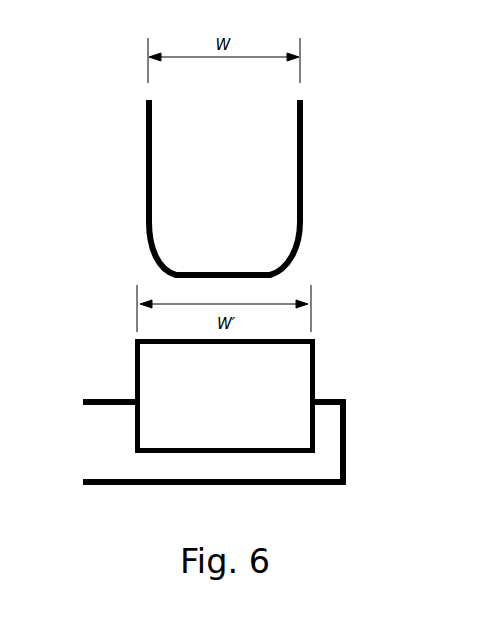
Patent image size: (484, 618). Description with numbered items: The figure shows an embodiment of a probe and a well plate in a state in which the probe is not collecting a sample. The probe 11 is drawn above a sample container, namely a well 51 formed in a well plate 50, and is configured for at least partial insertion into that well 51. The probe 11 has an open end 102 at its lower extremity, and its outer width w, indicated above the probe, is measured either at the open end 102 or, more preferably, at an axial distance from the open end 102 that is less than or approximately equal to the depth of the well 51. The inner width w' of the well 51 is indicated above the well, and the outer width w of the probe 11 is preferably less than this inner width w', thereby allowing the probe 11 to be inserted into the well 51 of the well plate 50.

The probe 11 is at (145, 193).
The open end 102 is at (258, 274).
The well 51 is at (314, 353).
The well plate 50 is at (346, 420).